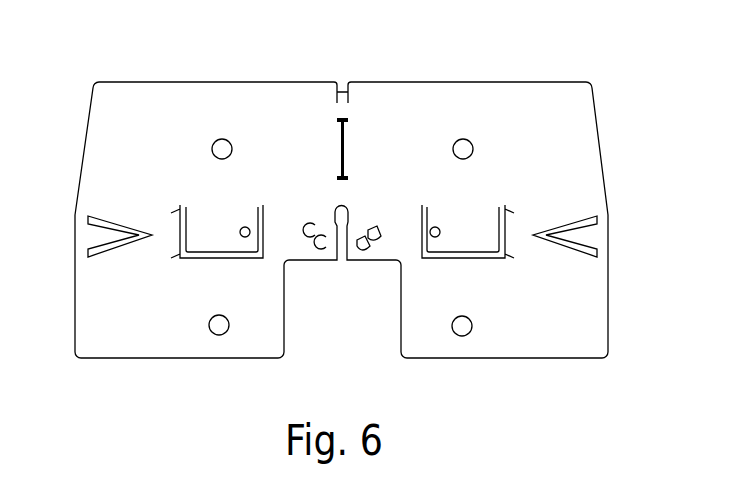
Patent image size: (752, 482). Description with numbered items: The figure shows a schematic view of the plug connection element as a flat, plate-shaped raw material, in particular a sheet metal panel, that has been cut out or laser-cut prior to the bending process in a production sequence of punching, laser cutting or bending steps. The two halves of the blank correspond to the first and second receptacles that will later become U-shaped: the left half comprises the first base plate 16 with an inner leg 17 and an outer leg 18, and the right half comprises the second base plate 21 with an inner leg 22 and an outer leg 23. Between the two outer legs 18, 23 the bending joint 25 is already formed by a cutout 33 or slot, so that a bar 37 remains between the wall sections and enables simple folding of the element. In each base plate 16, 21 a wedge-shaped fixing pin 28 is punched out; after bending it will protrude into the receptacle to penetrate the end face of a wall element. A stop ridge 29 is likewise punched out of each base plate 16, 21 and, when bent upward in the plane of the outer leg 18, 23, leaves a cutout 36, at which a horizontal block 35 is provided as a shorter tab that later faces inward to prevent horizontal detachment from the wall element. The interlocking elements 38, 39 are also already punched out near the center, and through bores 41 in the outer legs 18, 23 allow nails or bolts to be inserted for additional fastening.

The first base plate 16 is at (278, 236).
The inner leg 17 is at (93, 302).
The outer leg 18 is at (115, 118).
The second base plate 21 is at (406, 236).
The inner leg 22 is at (588, 304).
The outer leg 23 is at (572, 120).
The bending joint 25 is at (347, 68).
The fixing pin 28 is at (113, 235).
The stop ridge 29 is at (230, 240).
The cutout 33 is at (343, 155).
The horizontal block 35 is at (170, 246).
The cutout 36 is at (203, 260).
The bar 37 is at (342, 197).
The interlocking element 38 is at (313, 264).
The interlocking element 39 is at (375, 264).
The through bore 41 is at (222, 148).